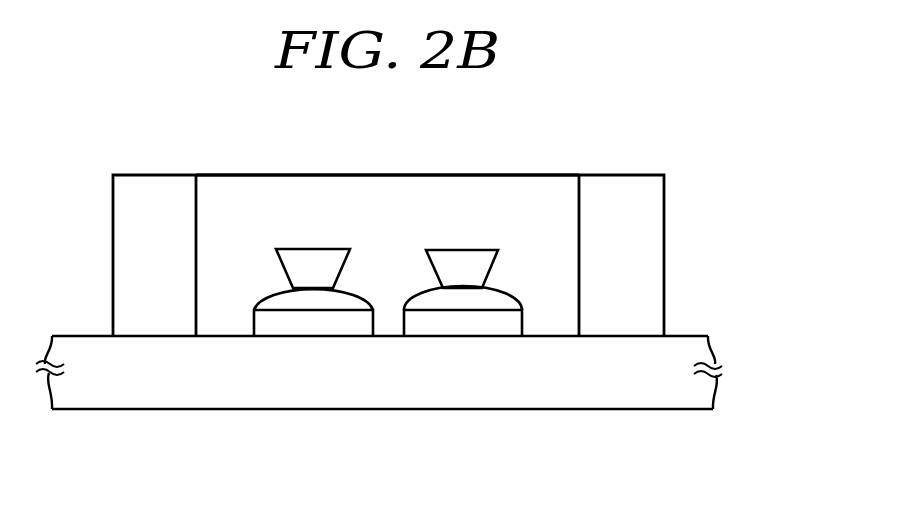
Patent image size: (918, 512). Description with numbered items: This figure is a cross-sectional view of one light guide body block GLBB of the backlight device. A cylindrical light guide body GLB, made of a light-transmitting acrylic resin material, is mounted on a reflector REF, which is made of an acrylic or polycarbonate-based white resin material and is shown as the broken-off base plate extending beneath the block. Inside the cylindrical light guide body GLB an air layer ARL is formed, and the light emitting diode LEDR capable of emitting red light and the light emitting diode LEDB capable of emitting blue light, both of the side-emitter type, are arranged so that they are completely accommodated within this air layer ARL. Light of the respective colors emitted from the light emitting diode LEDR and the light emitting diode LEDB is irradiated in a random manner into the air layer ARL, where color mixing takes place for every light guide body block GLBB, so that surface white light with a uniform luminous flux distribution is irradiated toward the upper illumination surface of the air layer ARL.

The reflector REF is at (643, 395).
The light guide body block GLBB is at (664, 250).
The light guide body GLB is at (609, 198).
The air layer ARL is at (373, 182).
The light emitting diode capable of emitting red light LEDR is at (308, 260).
The light emitting diode capable of emitting blue light LEDB is at (464, 262).